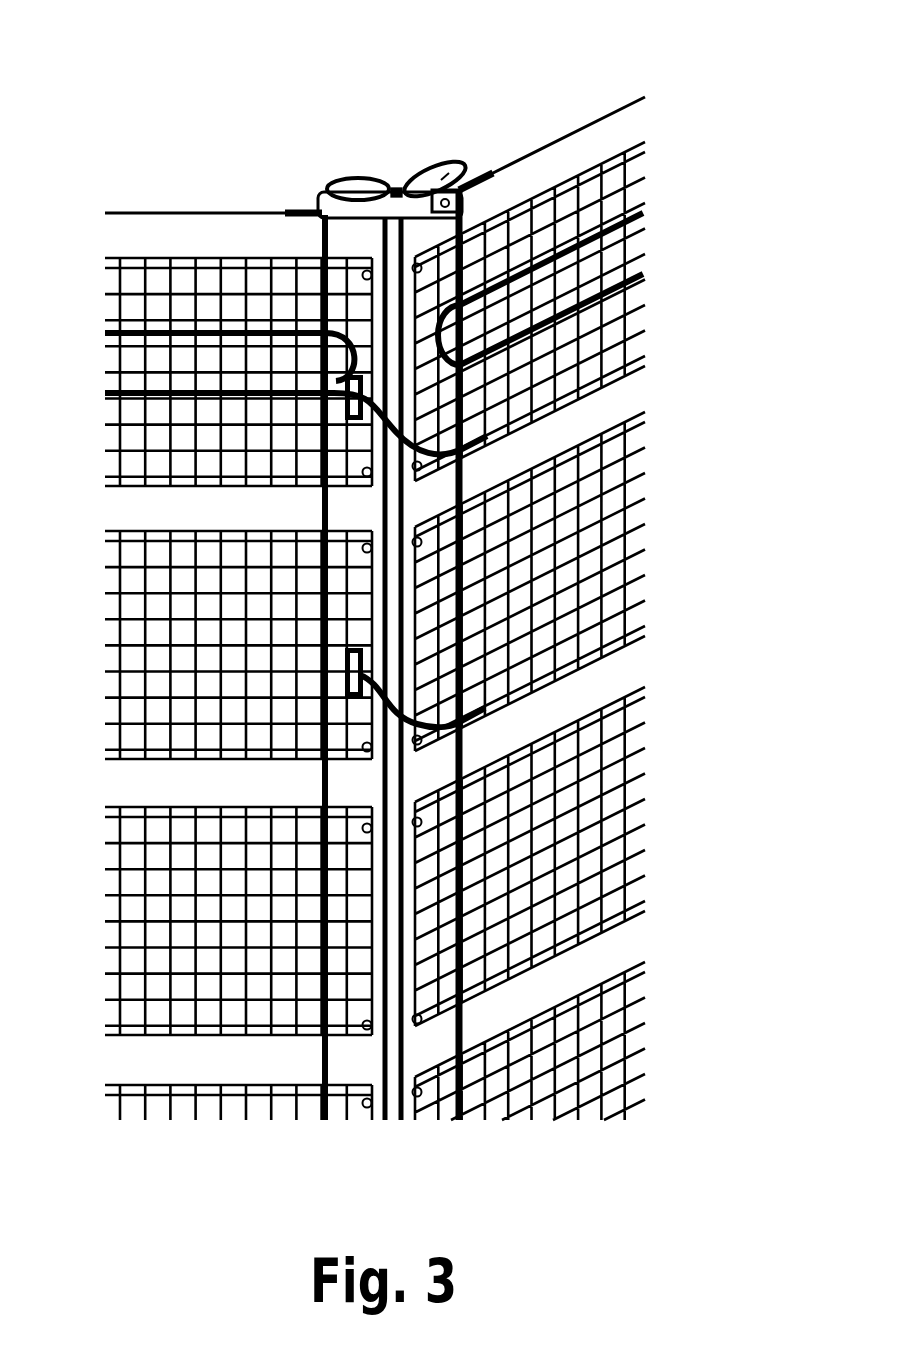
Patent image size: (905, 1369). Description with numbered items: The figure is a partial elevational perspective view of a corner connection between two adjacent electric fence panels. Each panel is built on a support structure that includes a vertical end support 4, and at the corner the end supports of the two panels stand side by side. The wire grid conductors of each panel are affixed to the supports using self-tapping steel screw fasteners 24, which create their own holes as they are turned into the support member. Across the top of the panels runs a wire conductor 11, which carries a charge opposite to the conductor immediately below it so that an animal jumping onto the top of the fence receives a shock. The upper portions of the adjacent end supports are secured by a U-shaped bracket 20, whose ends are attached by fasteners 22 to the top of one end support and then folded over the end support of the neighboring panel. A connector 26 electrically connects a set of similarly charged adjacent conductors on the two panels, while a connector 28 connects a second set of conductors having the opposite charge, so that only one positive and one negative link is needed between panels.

The vertical end support 4 is at (457, 163).
The wire conductor 11 is at (120, 215).
The U-shaped bracket 20 is at (327, 207).
The fastener 22 is at (410, 183).
The self-tapping steel screw fastener 24 is at (363, 272).
The connector 26 is at (473, 440).
The connector 28 is at (473, 718).